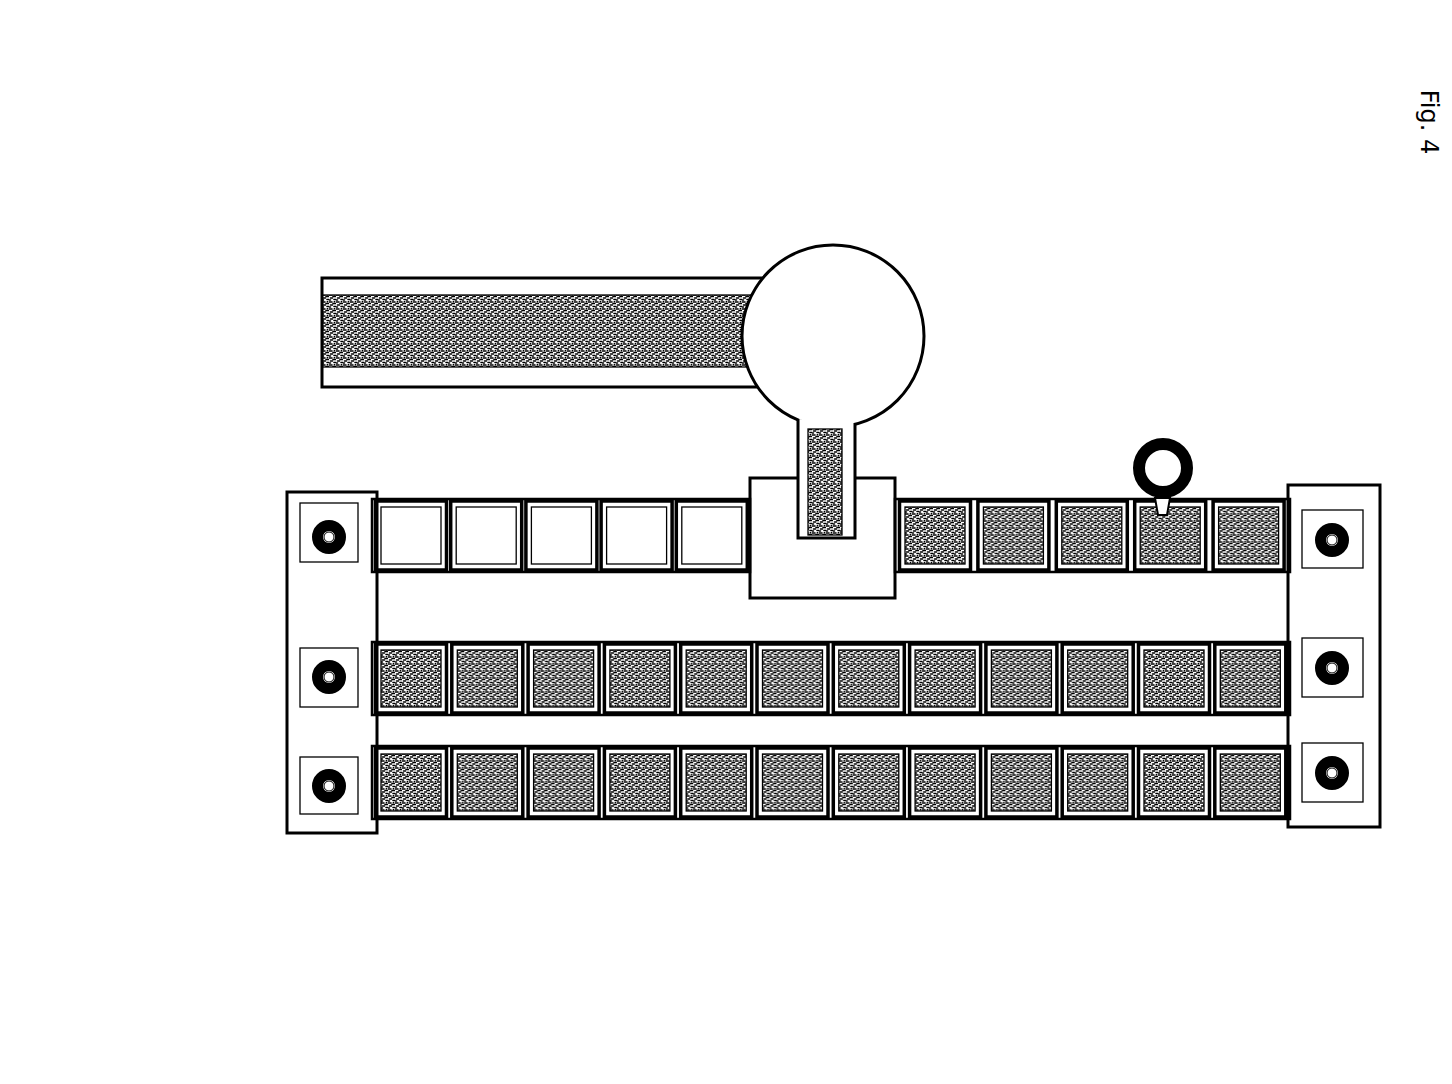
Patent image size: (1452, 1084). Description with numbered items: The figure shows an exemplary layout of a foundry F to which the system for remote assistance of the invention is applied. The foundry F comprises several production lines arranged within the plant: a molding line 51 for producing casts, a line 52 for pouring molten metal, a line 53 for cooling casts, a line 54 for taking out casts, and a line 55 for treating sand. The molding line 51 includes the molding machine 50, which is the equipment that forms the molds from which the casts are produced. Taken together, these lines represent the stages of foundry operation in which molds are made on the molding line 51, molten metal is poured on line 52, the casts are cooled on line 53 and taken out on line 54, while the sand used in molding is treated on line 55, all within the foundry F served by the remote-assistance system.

The foundry F is at (1210, 223).
The molding machine 50 is at (893, 476).
The molding line 51 is at (710, 485).
The line for pouring molten metal 52 is at (1190, 443).
The line for cooling casts 53 is at (1103, 823).
The line for taking out casts 54 is at (280, 680).
The line for treating sand 55 is at (633, 277).